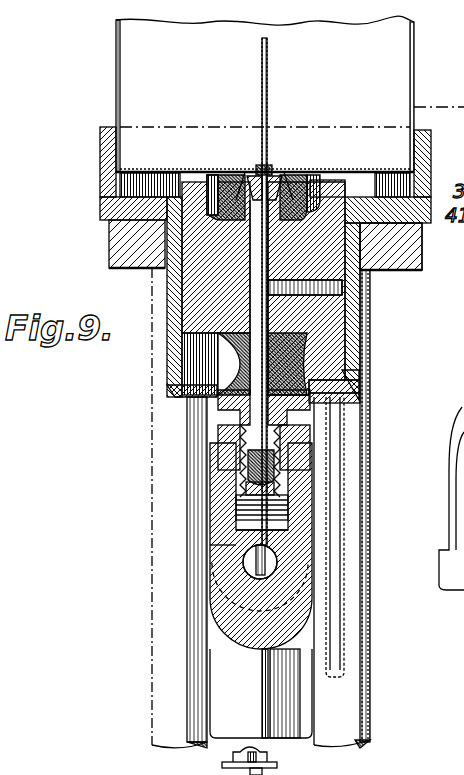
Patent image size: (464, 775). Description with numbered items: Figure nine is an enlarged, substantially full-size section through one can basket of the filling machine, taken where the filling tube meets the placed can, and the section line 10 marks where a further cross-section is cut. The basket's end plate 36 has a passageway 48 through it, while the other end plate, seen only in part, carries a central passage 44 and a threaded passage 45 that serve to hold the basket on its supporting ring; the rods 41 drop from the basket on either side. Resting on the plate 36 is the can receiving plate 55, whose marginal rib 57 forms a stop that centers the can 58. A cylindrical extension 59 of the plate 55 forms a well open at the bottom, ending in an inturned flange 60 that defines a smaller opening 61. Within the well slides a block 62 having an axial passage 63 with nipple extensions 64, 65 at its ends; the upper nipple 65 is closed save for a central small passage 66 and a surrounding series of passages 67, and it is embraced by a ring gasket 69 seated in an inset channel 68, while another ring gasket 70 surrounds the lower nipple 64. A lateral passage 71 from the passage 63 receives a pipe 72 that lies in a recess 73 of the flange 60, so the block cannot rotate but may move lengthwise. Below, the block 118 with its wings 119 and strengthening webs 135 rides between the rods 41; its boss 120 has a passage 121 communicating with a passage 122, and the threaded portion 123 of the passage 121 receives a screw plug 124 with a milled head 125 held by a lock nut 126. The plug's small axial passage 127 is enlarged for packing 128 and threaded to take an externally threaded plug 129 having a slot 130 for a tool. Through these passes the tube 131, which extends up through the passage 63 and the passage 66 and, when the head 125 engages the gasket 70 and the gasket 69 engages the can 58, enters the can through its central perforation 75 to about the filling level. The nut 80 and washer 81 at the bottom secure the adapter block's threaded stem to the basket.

The section line 10 is at (116, 107).
The end plate 36 is at (410, 258).
The rods 41 is at (170, 685).
The central passage 44 is at (194, 765).
The threaded passage 45 is at (402, 591).
The passageway 48 is at (108, 242).
The can receiving plate 55 is at (128, 208).
The rib 57 is at (100, 152).
The can 58 is at (416, 60).
The cylindrical axially extended portion 59 is at (172, 315).
The inturned flange 60 is at (167, 384).
The smaller opening 61 is at (350, 375).
The block 62 is at (200, 280).
The passage 63 is at (360, 240).
The nipple extension 64 is at (305, 352).
The nipple extension 65 is at (312, 178).
The central small passage 66 is at (270, 172).
The series of passages 67 is at (243, 172).
The axially inset channel 68 is at (330, 174).
The ring gasket 69 is at (222, 173).
The ring shaped gasket 70 is at (220, 350).
The passage 71 is at (355, 290).
The pipe 72 is at (340, 640).
The recess 73 is at (330, 385).
The central perforation 75 is at (260, 166).
The nut 80 is at (268, 757).
The washer 81 is at (278, 766).
The block 118 is at (305, 563).
The wings 119 is at (261, 693).
The boss 120 is at (220, 495).
The passage 121 is at (222, 548).
The passage 122 is at (247, 570).
The threaded portion 123 is at (275, 505).
The screw plug 124 is at (280, 480).
The head 125 is at (220, 405).
The lock nut 126 is at (222, 440).
The axial passage 127 is at (255, 530).
The packing 128 is at (290, 462).
The externally threaded plug 129 is at (300, 435).
The slot 130 is at (310, 400).
The tube 131 is at (270, 60).
The strengthening webs 135 is at (262, 700).